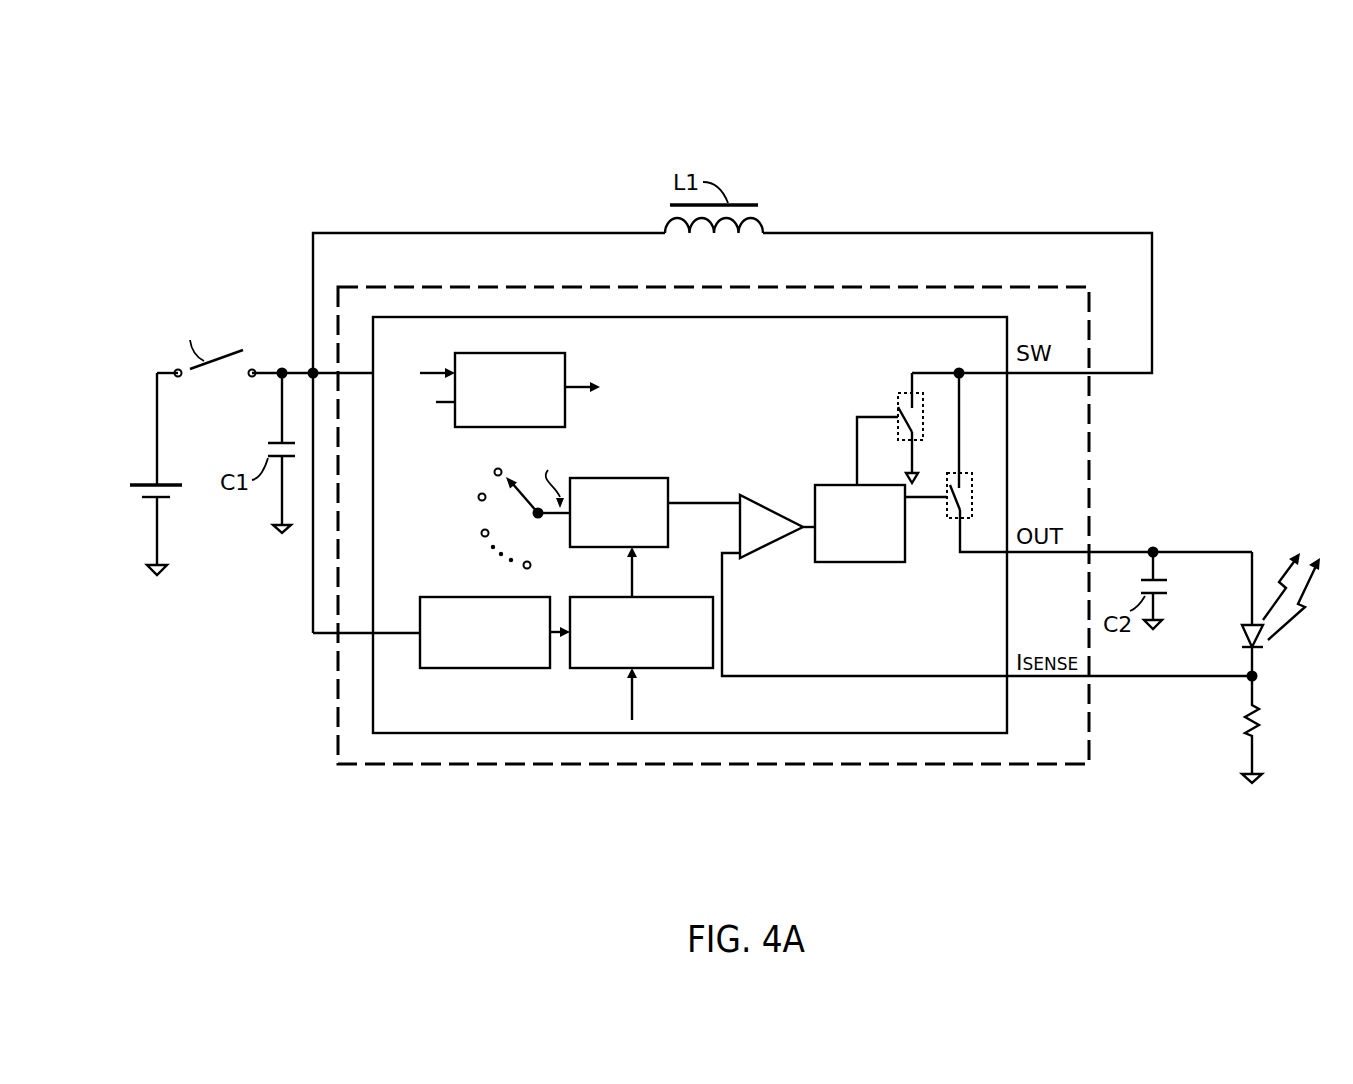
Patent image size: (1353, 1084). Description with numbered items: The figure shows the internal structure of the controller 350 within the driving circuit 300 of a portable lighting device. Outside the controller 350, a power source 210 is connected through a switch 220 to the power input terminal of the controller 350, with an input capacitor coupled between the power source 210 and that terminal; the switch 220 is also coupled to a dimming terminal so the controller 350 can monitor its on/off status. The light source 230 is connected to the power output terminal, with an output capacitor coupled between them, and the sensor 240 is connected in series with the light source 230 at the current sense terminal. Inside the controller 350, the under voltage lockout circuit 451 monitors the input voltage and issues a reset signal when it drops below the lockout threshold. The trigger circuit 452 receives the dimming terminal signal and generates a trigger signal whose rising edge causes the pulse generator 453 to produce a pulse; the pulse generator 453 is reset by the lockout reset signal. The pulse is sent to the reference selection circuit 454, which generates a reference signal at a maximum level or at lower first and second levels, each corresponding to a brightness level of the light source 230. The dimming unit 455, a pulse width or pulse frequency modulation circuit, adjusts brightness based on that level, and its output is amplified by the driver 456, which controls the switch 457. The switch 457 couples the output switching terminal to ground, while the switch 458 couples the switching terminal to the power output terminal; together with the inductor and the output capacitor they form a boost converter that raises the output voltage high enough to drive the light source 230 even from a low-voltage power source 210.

The driving circuit 300 is at (263, 155).
The controller 350 is at (668, 777).
The power source 210 is at (152, 483).
The switch 220 is at (206, 339).
The light source 230 is at (1241, 620).
The sensor 240 is at (1239, 736).
The under voltage lockout (UVLO) circuit 451 is at (553, 353).
The trigger circuit 452 is at (490, 593).
The pulse generator 453 is at (677, 593).
The reference selection circuit 454 is at (662, 480).
The dimming unit 455 is at (753, 497).
The driver 456 is at (893, 563).
The switch 457 is at (900, 397).
The switch 458 is at (993, 463).